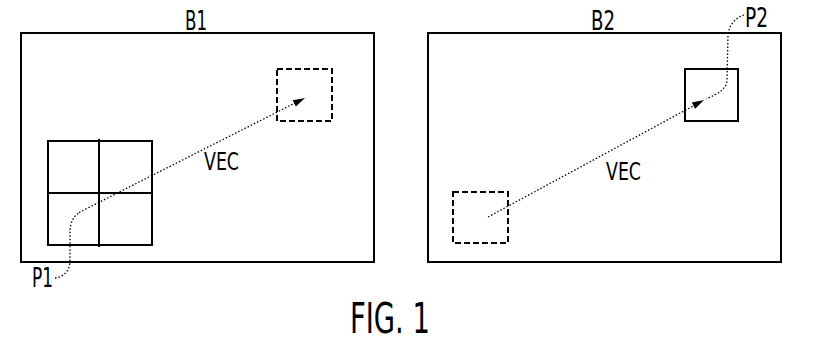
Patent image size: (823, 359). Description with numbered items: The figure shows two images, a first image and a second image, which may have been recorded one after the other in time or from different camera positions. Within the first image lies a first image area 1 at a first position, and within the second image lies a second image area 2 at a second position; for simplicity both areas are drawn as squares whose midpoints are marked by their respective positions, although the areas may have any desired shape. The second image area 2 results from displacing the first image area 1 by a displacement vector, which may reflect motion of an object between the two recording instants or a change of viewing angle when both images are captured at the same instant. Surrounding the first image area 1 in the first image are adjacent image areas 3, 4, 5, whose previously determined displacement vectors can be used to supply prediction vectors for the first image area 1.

The first image area 1 is at (63, 217).
The second image area 2 is at (702, 96).
The adjacent image area 3 is at (63, 162).
The adjacent image area 4 is at (151, 162).
The adjacent image area 5 is at (151, 217).